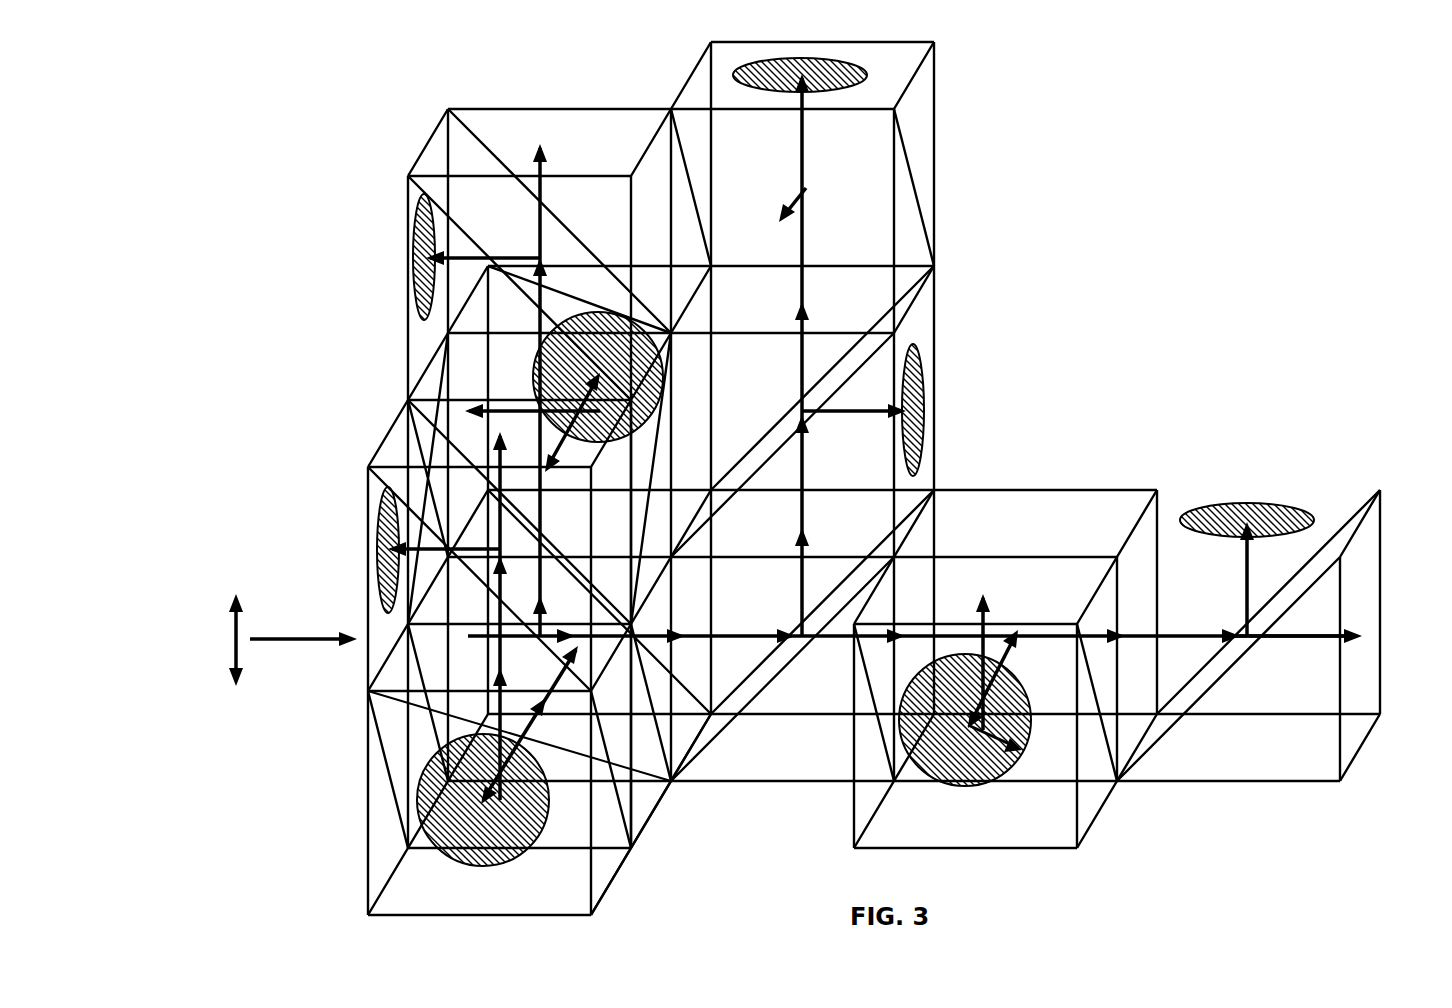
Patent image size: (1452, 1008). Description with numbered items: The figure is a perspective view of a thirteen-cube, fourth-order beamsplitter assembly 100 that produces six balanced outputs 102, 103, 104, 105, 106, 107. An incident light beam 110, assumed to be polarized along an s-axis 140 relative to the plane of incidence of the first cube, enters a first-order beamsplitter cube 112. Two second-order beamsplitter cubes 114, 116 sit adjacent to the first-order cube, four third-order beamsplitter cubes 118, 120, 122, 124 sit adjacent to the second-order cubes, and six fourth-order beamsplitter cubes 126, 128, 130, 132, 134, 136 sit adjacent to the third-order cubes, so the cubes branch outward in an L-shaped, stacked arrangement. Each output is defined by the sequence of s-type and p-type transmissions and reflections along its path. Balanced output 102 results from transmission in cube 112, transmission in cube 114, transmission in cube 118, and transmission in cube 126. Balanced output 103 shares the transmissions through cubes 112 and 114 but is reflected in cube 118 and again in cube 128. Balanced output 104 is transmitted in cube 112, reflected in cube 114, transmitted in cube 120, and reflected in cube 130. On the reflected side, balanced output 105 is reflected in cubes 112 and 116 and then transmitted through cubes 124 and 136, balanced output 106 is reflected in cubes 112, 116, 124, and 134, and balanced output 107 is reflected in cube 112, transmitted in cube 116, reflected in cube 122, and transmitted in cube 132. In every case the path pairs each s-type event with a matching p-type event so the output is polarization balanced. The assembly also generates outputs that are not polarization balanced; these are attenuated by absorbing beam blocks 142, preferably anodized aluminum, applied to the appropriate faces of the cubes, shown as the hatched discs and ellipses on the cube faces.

The beamsplitter assembly 100 is at (1102, 303).
The balanced output 102 is at (1362, 640).
The balanced output 103 is at (985, 597).
The balanced output 104 is at (792, 222).
The balanced output 105 is at (542, 150).
The balanced output 106 is at (447, 400).
The balanced output 107 is at (495, 437).
The incident light beam 110 is at (263, 641).
The first-order beamsplitter cube 112 is at (450, 712).
The second-order beamsplitter cube 114 is at (735, 789).
The second-order beamsplitter cube 116 is at (649, 814).
The third-order beamsplitter cube 118 is at (1090, 488).
The third-order beamsplitter cube 120 is at (935, 334).
The third-order beamsplitter cube 122 is at (611, 879).
The third-order beamsplitter cube 124 is at (368, 465).
The fourth-order beamsplitter cube 126 is at (1290, 488).
The fourth-order beamsplitter cube 128 is at (1089, 804).
The fourth-order beamsplitter cube 130 is at (935, 178).
The fourth-order beamsplitter cube 132 is at (376, 572).
The fourth-order beamsplitter cube 134 is at (487, 267).
The fourth-order beamsplitter cube 136 is at (407, 262).
The s-axis 140 is at (232, 625).
The absorbing beam block 142 is at (420, 240).